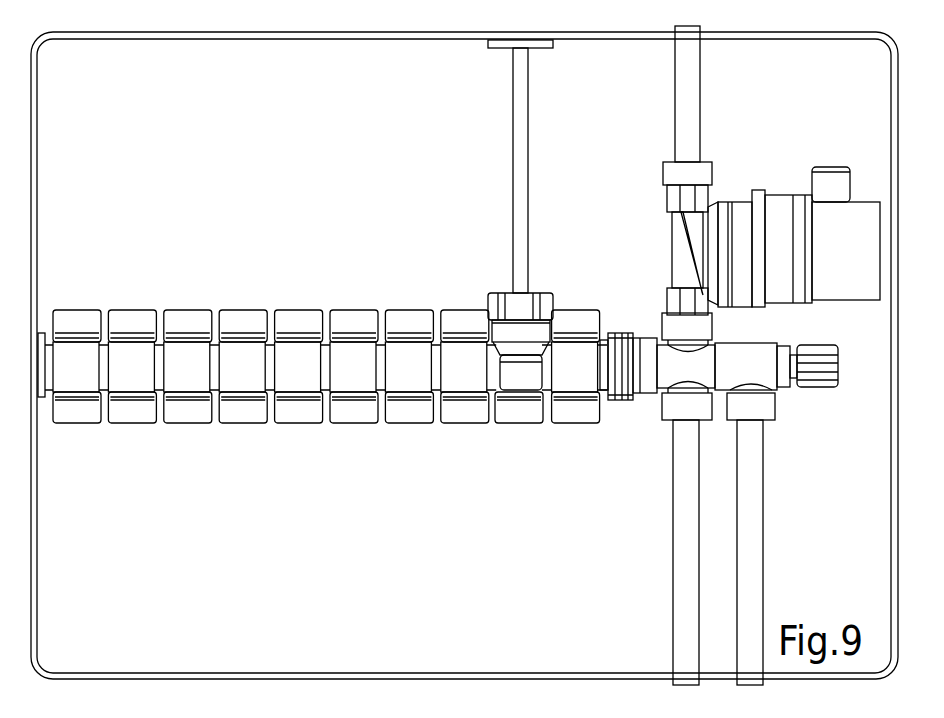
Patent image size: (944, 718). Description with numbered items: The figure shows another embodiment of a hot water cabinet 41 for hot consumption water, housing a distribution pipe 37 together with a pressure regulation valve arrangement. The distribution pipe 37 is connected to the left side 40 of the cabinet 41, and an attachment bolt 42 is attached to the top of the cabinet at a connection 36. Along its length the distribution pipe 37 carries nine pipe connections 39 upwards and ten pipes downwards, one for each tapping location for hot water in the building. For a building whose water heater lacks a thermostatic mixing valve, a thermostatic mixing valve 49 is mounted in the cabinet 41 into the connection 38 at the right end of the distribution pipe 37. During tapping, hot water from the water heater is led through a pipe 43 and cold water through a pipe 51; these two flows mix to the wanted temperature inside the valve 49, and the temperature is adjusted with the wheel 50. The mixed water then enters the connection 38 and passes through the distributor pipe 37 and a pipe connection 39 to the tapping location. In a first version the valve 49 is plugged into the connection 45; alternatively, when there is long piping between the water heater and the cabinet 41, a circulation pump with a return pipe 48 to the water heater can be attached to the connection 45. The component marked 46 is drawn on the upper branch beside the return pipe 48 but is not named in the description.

The connection 36 is at (502, 330).
The distribution pipe 37 is at (577, 367).
The connection 38 is at (622, 388).
The pipe connection 39 is at (128, 310).
The left side 40 is at (43, 335).
The hot water cabinet 41 is at (35, 577).
The attachment bolt 42 is at (495, 48).
The pipe 43 is at (685, 565).
The connection 45 is at (713, 323).
The angle valve 46 is at (773, 222).
The return pipe 48 is at (687, 68).
The thermostatic mixing valve 49 is at (750, 367).
The wheel 50 is at (830, 373).
The pipe 51 is at (748, 553).